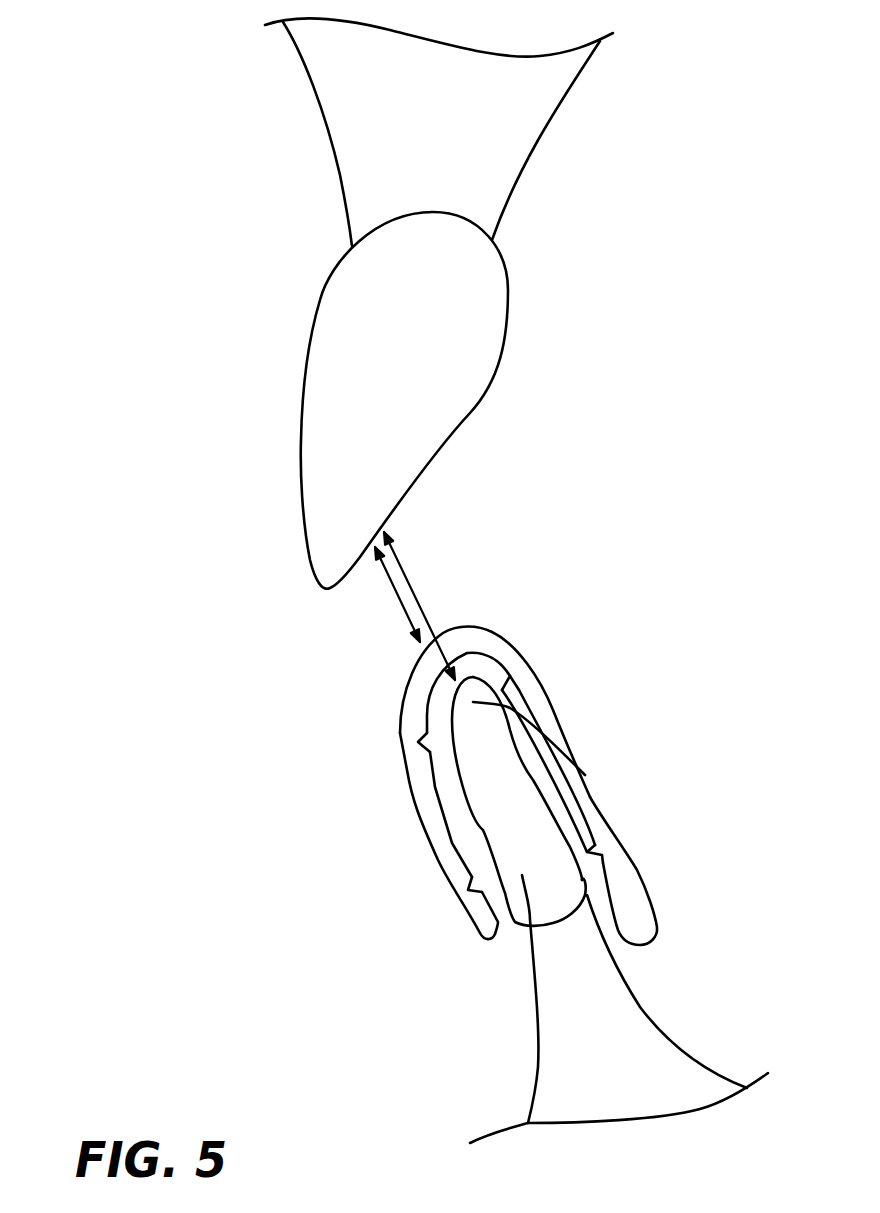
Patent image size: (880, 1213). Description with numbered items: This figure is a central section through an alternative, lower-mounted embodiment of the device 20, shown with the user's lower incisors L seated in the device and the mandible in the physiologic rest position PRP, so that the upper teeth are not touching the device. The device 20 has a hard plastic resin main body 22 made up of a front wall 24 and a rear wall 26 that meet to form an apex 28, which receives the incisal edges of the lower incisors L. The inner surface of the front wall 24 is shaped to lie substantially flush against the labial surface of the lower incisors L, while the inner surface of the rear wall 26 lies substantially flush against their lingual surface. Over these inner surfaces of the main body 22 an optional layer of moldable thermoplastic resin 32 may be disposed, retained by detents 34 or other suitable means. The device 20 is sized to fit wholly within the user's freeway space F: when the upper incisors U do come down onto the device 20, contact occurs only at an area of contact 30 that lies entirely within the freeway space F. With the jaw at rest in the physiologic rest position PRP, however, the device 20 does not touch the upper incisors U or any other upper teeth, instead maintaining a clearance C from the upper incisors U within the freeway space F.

The upper incisors U is at (382, 322).
The lower incisors L is at (522, 868).
The freeway space F is at (412, 590).
The clearance C is at (412, 592).
The physiologic rest position PRP is at (585, 775).
The lower-mounted device 20 is at (503, 776).
The main body 22 is at (520, 648).
The front wall 24 is at (430, 808).
The rear wall 26 is at (594, 800).
The apex 28 is at (458, 638).
The area of contact 30 is at (417, 627).
The layer of moldable thermoplastic resin 32 is at (462, 838).
The detents 34 is at (511, 677).